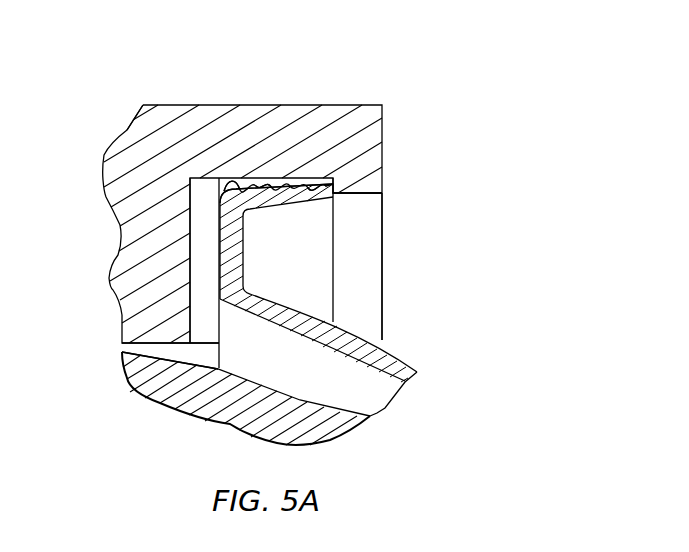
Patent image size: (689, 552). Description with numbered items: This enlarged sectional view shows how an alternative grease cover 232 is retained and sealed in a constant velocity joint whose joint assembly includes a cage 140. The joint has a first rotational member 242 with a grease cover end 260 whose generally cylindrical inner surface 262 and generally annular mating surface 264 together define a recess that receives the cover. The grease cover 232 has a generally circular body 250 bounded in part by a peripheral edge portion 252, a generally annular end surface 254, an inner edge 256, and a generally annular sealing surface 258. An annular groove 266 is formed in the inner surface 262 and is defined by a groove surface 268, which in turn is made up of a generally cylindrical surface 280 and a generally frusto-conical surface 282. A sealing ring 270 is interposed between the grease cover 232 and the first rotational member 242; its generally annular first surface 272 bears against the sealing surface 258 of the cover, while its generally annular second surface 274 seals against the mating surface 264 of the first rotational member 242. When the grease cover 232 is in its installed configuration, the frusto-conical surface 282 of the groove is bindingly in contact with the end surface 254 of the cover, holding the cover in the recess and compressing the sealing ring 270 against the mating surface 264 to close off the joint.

The cage 140 is at (372, 419).
The grease cover 232 is at (386, 318).
The first rotational member 242 is at (158, 120).
The body 250 is at (398, 362).
The peripheral edge portion 252 is at (306, 178).
The end surface 254 is at (340, 183).
The inner edge 256 is at (336, 293).
The sealing surface 258 is at (217, 314).
The grease cover end 260 is at (400, 130).
The inner surface 262 is at (358, 198).
The mating surface 264 is at (212, 357).
The annular groove 266 is at (224, 183).
The groove surface 268 is at (217, 190).
The sealing ring 270 is at (214, 256).
The first surface 272 is at (138, 132).
The second surface 274 is at (188, 196).
The cylindrical surface 280 is at (266, 180).
The frusto-conical surface 282 is at (336, 182).